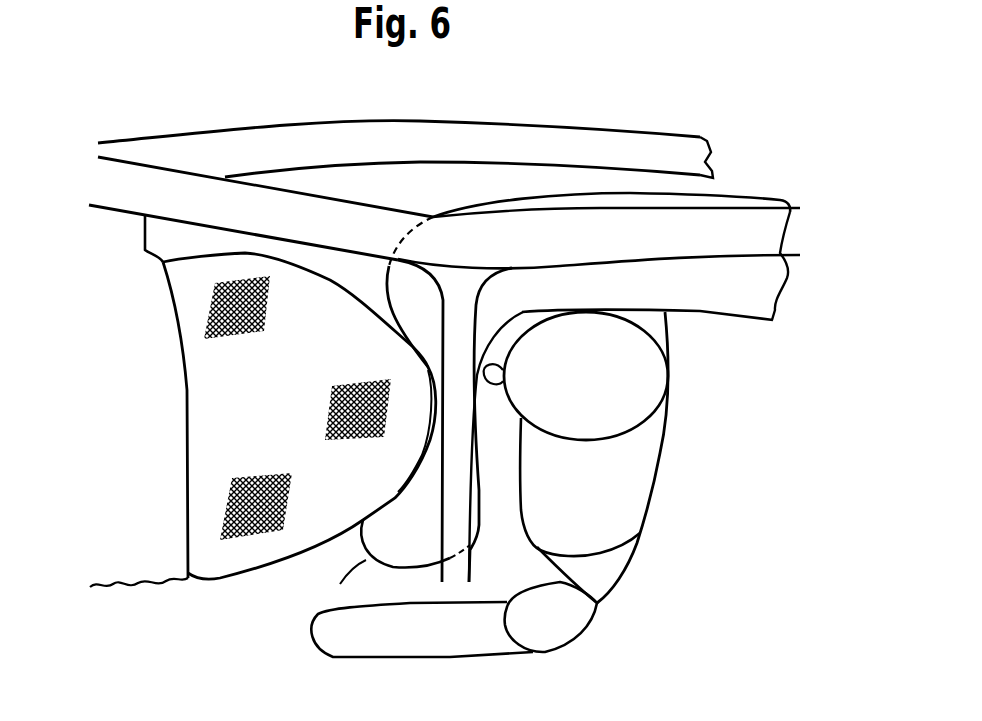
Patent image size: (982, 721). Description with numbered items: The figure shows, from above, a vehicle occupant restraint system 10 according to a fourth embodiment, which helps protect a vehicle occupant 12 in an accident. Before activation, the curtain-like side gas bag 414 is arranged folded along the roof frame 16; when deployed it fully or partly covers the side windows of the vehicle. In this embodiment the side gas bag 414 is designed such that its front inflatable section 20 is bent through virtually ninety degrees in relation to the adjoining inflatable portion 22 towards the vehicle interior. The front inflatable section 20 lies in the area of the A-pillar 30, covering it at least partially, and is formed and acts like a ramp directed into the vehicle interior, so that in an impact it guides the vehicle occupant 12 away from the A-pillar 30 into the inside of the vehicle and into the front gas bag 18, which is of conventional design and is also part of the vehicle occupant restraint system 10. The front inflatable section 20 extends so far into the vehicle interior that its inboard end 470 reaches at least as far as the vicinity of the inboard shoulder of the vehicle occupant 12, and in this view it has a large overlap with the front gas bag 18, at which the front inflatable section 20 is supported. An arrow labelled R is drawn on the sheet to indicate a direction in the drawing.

The vehicle occupant restraint system 10 is at (740, 393).
The vehicle occupant 12 is at (612, 388).
The roof frame 16 is at (725, 223).
The front gas bag 18 is at (240, 293).
The front inflatable section 20 is at (423, 548).
The adjoining inflatable portion 22 is at (701, 300).
The A-pillar 30 is at (317, 222).
The side gas bag 414 is at (522, 282).
The inboard end 470 is at (366, 560).
The rearward direction R is at (176, 649).